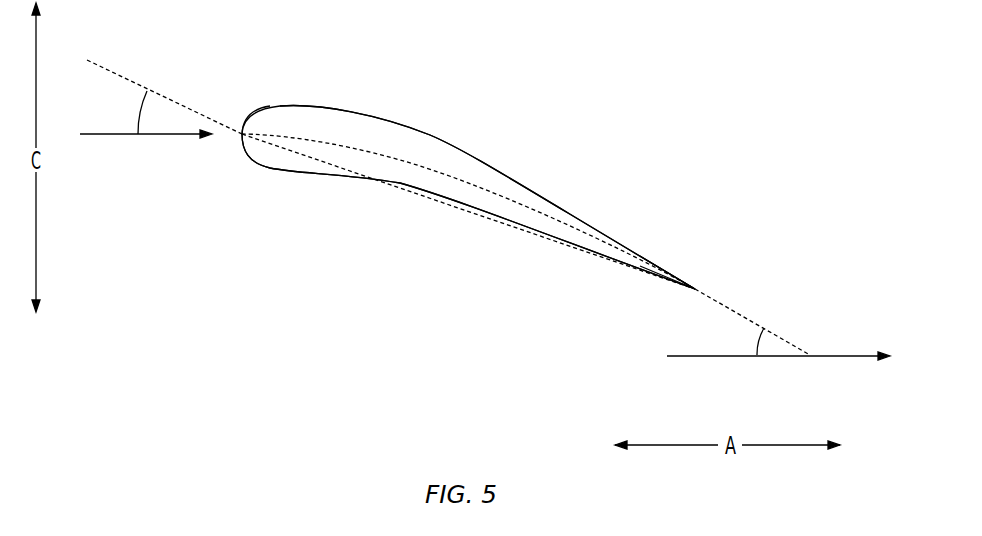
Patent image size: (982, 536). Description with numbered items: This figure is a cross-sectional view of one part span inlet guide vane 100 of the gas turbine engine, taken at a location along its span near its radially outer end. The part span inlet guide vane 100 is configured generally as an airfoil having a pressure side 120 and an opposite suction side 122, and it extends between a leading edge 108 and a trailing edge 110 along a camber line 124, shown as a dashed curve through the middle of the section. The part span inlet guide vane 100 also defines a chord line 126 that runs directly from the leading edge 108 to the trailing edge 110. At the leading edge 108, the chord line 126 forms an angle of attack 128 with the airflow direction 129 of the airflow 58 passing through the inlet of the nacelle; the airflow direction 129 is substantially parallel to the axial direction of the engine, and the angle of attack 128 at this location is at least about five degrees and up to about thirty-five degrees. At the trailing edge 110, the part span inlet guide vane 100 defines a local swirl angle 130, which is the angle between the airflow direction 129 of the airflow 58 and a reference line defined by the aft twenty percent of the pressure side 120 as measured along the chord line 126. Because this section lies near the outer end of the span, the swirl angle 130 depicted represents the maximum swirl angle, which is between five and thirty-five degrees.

The part span inlet guide vane 100 is at (490, 94).
The leading edge 108 is at (232, 120).
The trailing edge 110 is at (707, 285).
The pressure side 120 is at (381, 206).
The suction side 122 is at (432, 114).
The camber line 124 is at (490, 185).
The chord line 126 is at (472, 213).
The angle of attack 128 is at (138, 118).
The airflow direction 129 is at (852, 355).
The local swirl angle 130 is at (757, 347).
The airflow 58 is at (115, 136).